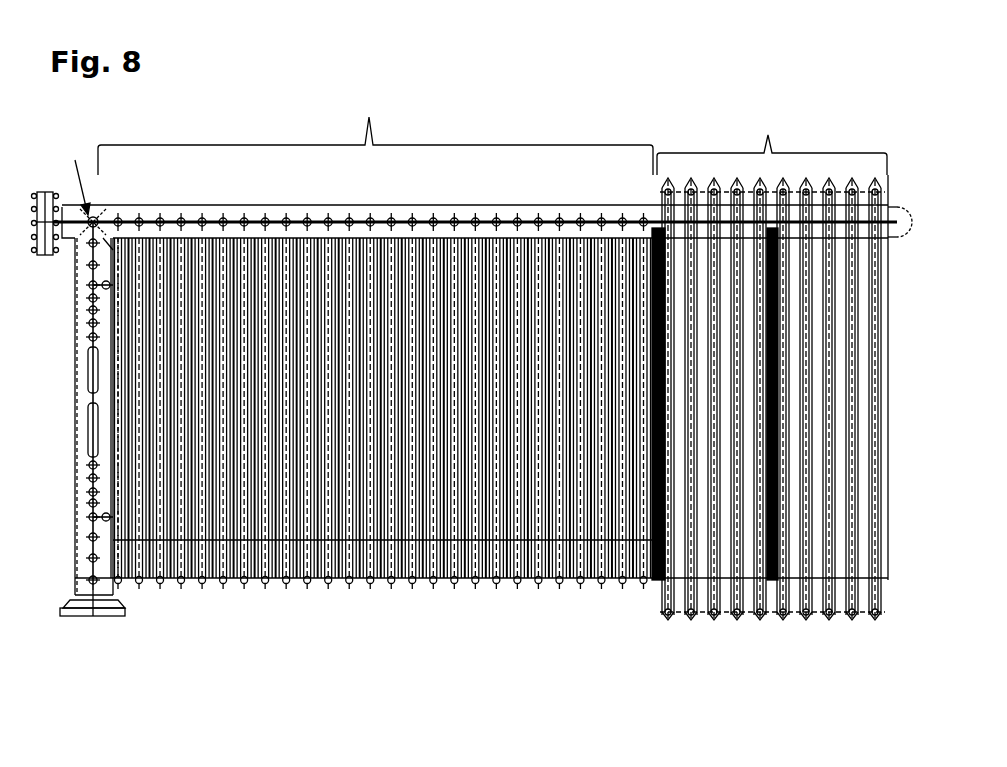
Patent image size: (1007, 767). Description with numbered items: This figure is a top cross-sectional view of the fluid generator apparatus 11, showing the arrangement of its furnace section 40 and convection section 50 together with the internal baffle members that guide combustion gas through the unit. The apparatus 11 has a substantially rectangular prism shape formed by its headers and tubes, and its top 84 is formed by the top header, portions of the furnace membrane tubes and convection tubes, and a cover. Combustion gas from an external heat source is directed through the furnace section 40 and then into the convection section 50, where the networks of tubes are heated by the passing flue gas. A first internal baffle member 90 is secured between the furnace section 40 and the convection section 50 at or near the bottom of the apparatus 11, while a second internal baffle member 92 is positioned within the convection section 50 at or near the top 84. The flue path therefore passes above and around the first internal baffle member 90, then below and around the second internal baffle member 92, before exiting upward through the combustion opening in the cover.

The apparatus 11 is at (887, 87).
The furnace section 40 is at (376, 409).
The convection section 50 is at (768, 153).
The top 84 is at (525, 463).
The first internal baffle member 90 is at (655, 578).
The second internal baffle member 92 is at (770, 578).